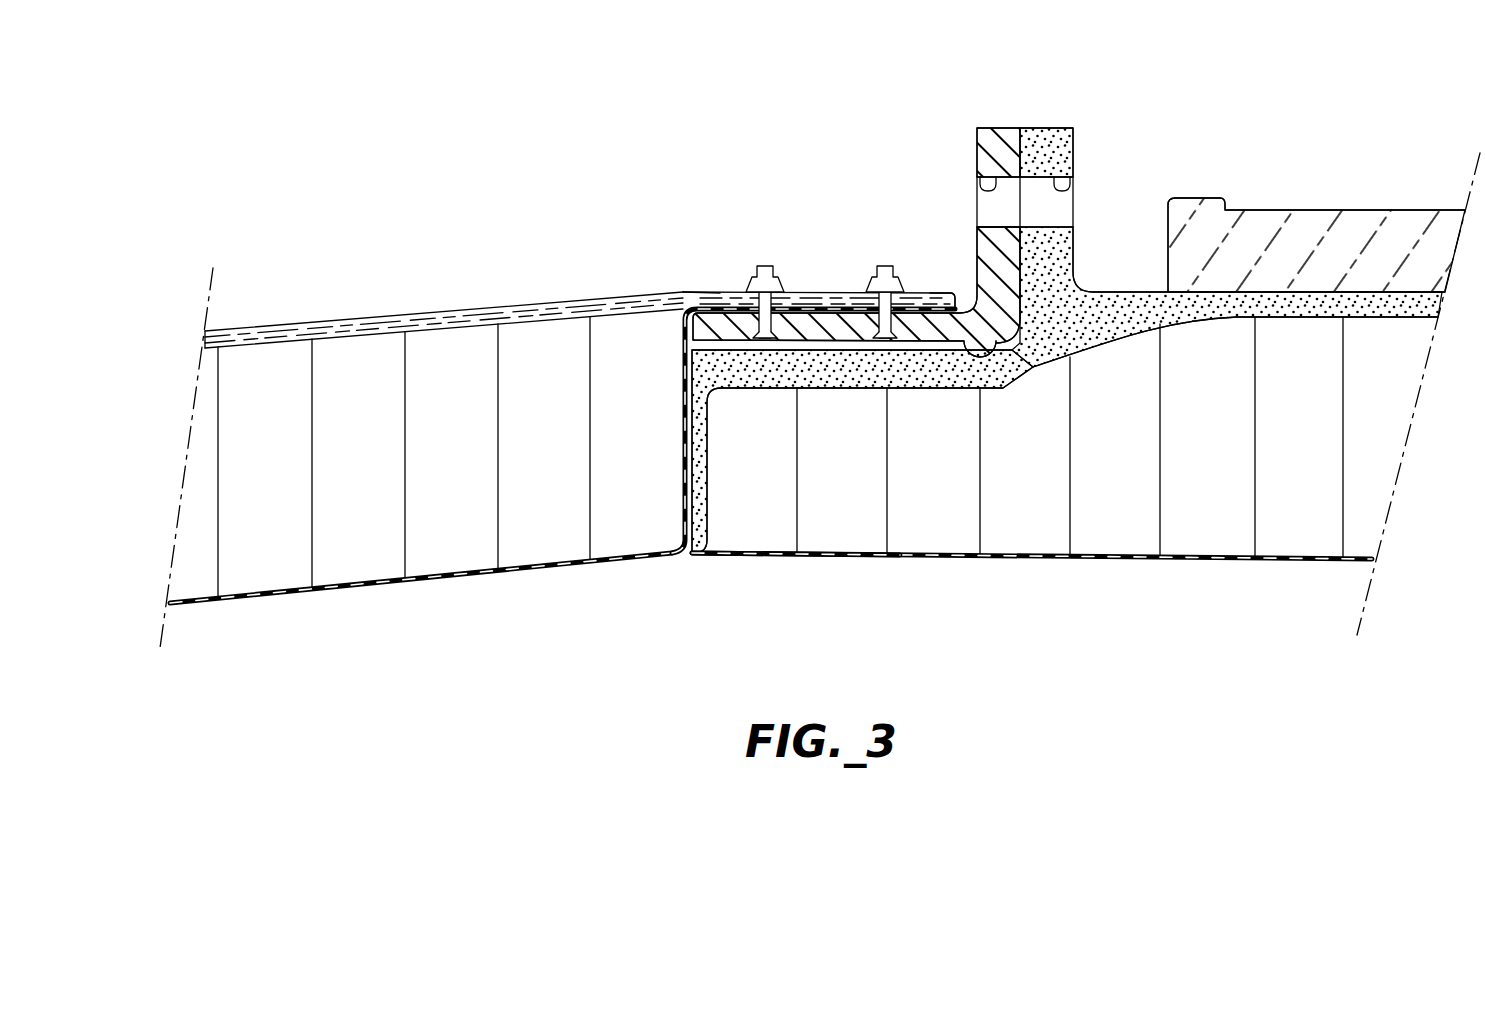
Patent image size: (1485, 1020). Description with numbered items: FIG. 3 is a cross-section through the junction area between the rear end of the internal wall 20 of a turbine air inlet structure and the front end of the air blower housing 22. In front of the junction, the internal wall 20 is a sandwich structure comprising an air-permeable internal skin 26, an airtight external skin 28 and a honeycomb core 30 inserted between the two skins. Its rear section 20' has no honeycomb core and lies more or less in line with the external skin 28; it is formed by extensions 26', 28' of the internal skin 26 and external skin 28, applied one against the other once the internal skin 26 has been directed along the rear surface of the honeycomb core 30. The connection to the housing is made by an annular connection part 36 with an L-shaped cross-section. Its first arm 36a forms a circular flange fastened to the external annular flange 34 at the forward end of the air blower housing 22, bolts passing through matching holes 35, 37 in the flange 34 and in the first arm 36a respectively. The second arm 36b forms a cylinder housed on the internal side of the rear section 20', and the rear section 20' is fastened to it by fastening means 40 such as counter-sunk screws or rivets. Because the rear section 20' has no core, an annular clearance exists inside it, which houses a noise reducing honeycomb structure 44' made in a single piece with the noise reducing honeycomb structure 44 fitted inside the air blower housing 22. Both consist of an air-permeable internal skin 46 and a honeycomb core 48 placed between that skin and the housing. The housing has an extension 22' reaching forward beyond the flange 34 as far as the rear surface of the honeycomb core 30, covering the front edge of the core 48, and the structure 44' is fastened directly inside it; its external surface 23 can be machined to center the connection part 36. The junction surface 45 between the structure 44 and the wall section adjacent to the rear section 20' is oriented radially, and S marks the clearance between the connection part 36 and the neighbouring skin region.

The internal wall 20 is at (421, 455).
The external skin 28 is at (444, 282).
The honeycomb core 30 is at (450, 357).
The internal skin 26 is at (421, 623).
The junction surface 45 is at (684, 490).
The rear section 20' is at (790, 385).
The extension of the external skin 28' is at (819, 263).
The extension of the internal skin 26' is at (939, 263).
The second arm 36b is at (705, 292).
The extension 22' is at (862, 451).
The annular connection part 36 is at (1067, 250).
The external annular flange 34 is at (1050, 155).
The hole 35 is at (1073, 195).
The hole 37 is at (977, 193).
The first arm 36a is at (997, 280).
The external surface 23 is at (1030, 372).
The fastening means 40 is at (886, 340).
The air blower housing 22 is at (1316, 216).
The honeycomb core 48 is at (1323, 463).
The noise reducing honeycomb structure 44 is at (1032, 594).
The noise reducing honeycomb structure 44' is at (804, 594).
The internal skin 46 is at (1300, 568).
The gap / clearance S is at (695, 346).